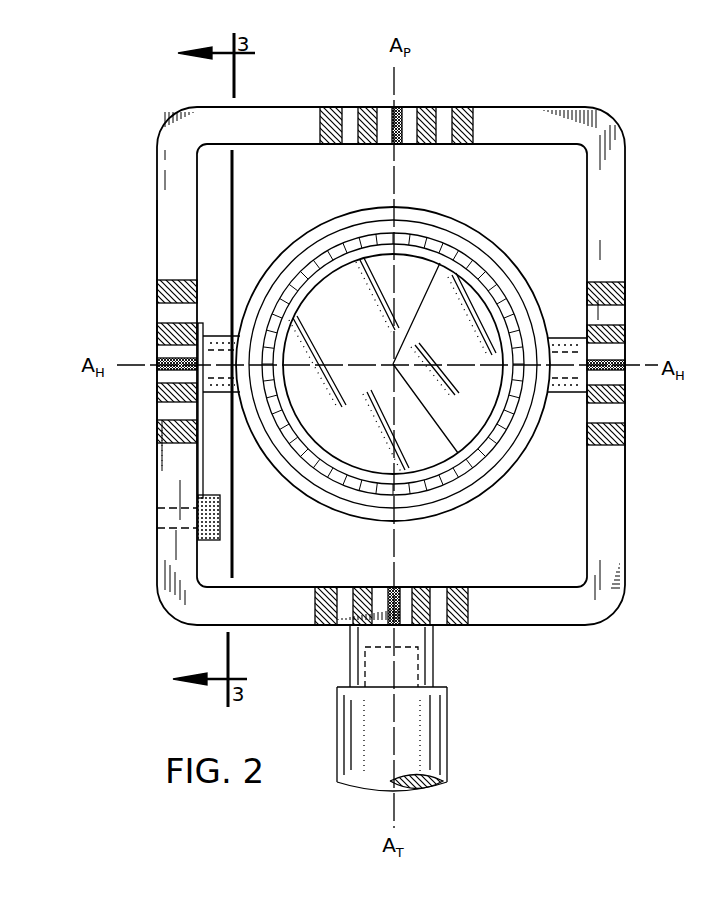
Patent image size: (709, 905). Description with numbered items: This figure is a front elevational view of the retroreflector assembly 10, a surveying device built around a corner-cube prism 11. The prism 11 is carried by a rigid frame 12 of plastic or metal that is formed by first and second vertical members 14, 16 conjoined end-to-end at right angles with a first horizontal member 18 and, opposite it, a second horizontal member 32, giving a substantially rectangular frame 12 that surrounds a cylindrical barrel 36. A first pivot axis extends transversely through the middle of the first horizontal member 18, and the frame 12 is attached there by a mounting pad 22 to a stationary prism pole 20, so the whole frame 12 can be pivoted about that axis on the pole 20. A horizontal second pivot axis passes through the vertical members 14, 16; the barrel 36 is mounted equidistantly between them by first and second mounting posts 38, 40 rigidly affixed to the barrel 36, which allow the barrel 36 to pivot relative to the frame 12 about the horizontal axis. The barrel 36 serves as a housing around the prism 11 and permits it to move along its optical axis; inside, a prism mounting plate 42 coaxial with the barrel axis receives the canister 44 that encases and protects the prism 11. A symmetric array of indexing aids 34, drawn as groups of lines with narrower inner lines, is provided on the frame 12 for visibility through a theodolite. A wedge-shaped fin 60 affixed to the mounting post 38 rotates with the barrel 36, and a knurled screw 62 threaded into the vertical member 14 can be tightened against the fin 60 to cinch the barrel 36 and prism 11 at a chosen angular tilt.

The retroreflector assembly 10 is at (612, 75).
The corner-cube prism 11 is at (337, 293).
The frame 12 is at (147, 613).
The first vertical member 14 is at (173, 490).
The second vertical member 16 is at (607, 501).
The first horizontal member 18 is at (523, 612).
The prism pole 20 is at (437, 730).
The mounting pad 22 is at (425, 651).
The second horizontal member 32 is at (527, 118).
The indexing aids 34 is at (472, 107).
The barrel 36 is at (441, 217).
The first mounting post 38 is at (213, 345).
The second mounting post 40 is at (562, 395).
The prism mounting plate 42 is at (462, 247).
The canister 44 is at (482, 285).
The wedge-shaped fin 60 is at (198, 452).
The knurled screw 62 is at (220, 520).